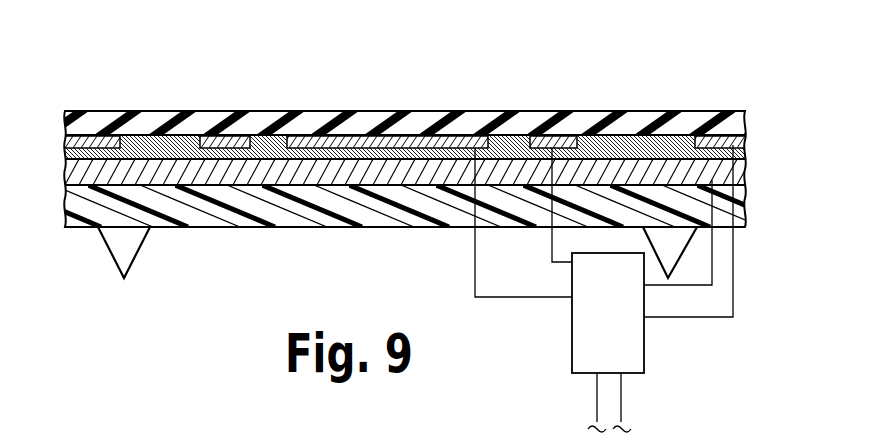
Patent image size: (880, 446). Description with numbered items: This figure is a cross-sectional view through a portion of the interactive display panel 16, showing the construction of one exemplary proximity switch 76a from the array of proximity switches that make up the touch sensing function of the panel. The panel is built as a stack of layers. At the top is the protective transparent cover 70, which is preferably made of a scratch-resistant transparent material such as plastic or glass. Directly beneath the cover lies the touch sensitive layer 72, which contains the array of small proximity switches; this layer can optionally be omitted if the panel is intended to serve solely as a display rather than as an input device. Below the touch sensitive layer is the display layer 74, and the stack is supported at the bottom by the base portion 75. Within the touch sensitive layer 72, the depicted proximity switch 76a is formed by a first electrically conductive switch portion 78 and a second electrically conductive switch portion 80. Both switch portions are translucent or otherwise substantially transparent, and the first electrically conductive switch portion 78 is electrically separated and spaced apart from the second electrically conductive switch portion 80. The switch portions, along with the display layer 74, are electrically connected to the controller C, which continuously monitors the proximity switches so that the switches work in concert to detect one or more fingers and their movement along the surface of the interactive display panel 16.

The interactive display panel 16 is at (299, 74).
The protective transparent cover 70 is at (735, 118).
The touch sensitive layer 72 is at (441, 93).
The display layer 74 is at (748, 172).
The base portion 75 is at (748, 193).
The proximity switch 76a is at (405, 60).
The first electrically conductive switch portion 78 is at (401, 136).
The second electrically conductive switch portion 80 is at (562, 136).
The controller C is at (622, 330).